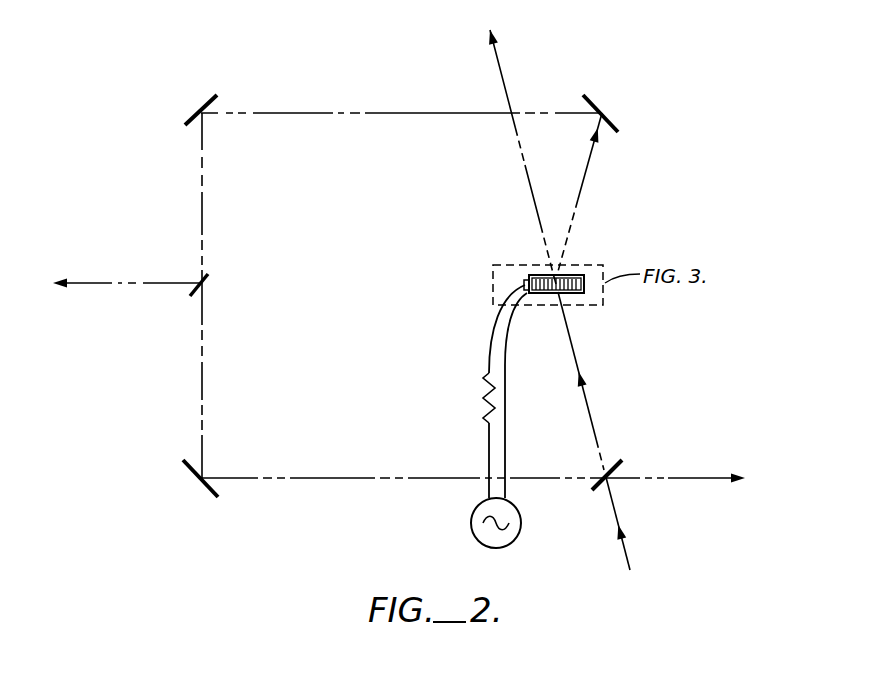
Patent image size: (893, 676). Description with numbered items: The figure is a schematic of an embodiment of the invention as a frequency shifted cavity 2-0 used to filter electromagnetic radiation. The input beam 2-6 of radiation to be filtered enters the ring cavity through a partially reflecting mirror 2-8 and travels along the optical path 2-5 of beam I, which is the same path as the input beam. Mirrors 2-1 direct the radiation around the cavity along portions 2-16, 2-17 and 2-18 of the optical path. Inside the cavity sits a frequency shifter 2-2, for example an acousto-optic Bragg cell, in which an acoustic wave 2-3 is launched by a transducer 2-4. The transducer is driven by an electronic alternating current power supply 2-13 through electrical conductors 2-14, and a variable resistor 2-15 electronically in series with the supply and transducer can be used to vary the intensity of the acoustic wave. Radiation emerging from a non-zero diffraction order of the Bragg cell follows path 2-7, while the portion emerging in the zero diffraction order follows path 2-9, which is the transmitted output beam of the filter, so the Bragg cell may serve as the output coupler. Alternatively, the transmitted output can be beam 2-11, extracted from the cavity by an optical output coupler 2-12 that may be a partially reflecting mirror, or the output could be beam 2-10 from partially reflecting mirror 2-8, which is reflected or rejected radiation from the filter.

The frequency shifted cavity 2-0 is at (712, 124).
The mirrors 2-1 is at (198, 110).
The frequency shifter 2-2 is at (586, 294).
The acoustic wave 2-3 is at (572, 275).
The transducer 2-4 is at (530, 277).
The optical path of beam I 2-5 is at (588, 408).
The input beam 2-6 is at (618, 520).
The path of non-zero diffraction order radiation 2-7 is at (583, 198).
The partially reflecting mirror 2-8 is at (600, 488).
The path of zero diffraction order radiation 2-9 is at (502, 74).
The output beam 2-10 is at (697, 478).
The output beam 2-11 is at (113, 284).
The optical output coupler 2-12 is at (208, 286).
The electronic alternating current power supply 2-13 is at (472, 521).
The electrical conductors 2-14 is at (488, 453).
The variable resistor 2-15 is at (474, 398).
The portion of optical path 2-16 is at (368, 113).
The portion of optical path 2-17 is at (202, 191).
The portion of optical path 2-18 is at (258, 477).